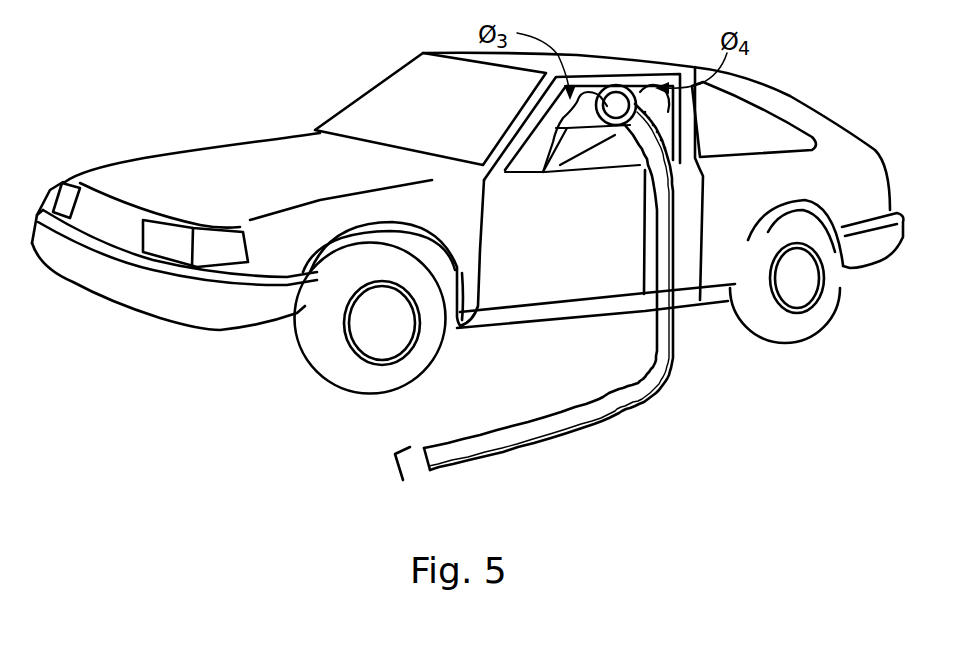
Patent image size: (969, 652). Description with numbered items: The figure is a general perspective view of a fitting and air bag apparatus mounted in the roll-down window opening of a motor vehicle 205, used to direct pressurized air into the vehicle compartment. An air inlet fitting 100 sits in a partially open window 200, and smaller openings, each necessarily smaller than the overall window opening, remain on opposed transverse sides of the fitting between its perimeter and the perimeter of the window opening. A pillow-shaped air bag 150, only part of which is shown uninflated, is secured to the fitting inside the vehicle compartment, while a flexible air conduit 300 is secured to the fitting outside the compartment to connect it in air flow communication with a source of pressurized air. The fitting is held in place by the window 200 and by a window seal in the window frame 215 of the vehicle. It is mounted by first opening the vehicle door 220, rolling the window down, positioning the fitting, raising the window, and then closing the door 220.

The vehicle 205 is at (282, 97).
The vehicle door 220 is at (585, 280).
The window 200 is at (617, 152).
The air bag 150 is at (587, 97).
The window frame 215 is at (545, 116).
The air inlet fitting 100 is at (624, 88).
The flexible air conduit 300 is at (638, 356).